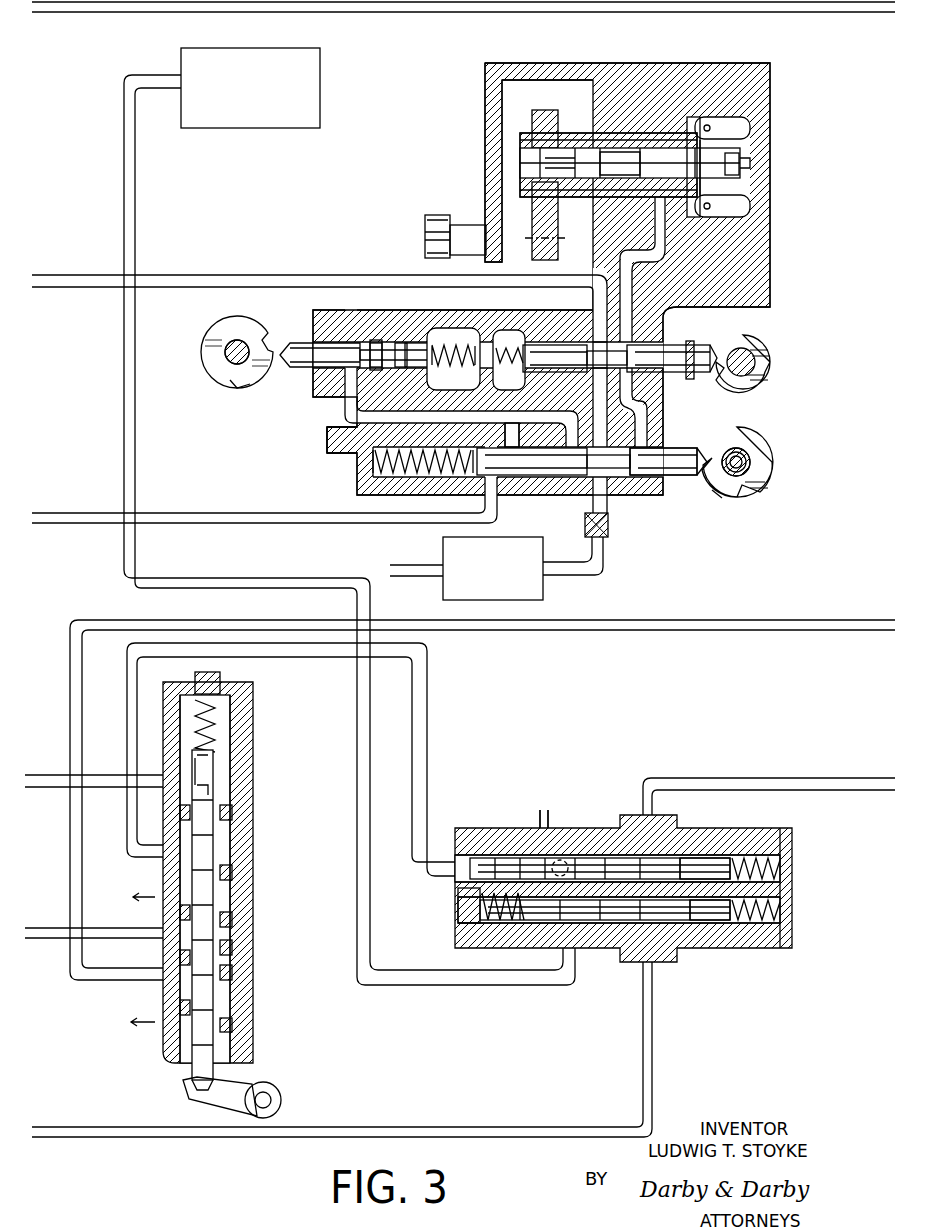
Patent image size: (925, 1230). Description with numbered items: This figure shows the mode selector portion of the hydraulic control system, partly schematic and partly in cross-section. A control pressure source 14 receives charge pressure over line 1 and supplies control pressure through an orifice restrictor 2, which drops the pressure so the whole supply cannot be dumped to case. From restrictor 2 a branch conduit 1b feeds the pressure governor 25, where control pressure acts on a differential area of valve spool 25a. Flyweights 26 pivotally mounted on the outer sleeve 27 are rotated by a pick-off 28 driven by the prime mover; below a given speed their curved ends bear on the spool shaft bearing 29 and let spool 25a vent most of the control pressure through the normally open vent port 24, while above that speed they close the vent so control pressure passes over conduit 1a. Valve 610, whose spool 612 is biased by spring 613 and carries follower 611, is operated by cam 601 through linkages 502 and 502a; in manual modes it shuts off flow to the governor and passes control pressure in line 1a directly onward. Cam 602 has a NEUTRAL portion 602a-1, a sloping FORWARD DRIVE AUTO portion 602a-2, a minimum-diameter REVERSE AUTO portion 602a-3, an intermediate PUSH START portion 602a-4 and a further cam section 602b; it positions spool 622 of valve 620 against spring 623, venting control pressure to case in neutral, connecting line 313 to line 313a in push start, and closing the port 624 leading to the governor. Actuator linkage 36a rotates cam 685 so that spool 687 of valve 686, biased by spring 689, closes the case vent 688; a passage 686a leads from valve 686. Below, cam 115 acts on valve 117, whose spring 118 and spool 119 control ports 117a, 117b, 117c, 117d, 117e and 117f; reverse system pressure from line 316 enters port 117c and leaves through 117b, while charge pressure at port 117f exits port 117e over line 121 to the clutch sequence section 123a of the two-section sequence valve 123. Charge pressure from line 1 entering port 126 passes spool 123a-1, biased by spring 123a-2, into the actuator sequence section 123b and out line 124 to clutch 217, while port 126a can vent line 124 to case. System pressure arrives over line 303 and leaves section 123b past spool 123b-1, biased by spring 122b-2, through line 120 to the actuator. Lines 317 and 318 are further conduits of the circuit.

The fluid line 318 is at (48, 8).
The clutch 217 is at (250, 88).
The line 124 is at (135, 195).
The conduit 1a is at (42, 282).
The branch conduit 1b is at (657, 232).
The line 1 is at (44, 760).
The vent port 24 is at (594, 130).
The pressure governor 25 is at (645, 64).
The valve spool 25a is at (642, 150).
The flyweights 26 is at (751, 128).
The outer sleeve 27 is at (692, 118).
The pick-off 28 is at (553, 250).
The spool shaft bearing 29 is at (720, 182).
The cam 685 is at (233, 328).
The actuator linkage 36a is at (228, 374).
The valve 686 is at (295, 385).
The passage 686a is at (344, 404).
The spool 687 is at (336, 343).
The vent port 688 is at (410, 307).
The spring 689 is at (463, 343).
The spring 613 is at (510, 344).
The spool 612 is at (562, 345).
The valve 610 is at (656, 339).
The follower 611 is at (690, 380).
The cam 601 is at (786, 364).
The linkage 502 is at (758, 345).
The linkage 502a is at (768, 373).
The cam 602 is at (747, 505).
The NEUTRAL cam portion 602a-1 is at (761, 436).
The FORWARD DRIVE AUTO cam portion 602a-2 is at (710, 436).
The REVERSE AUTO cam portion 602a-3 is at (724, 504).
The PUSH START cam portion 602a-4 is at (760, 488).
The cam section 602b is at (772, 475).
The spool 622 is at (655, 452).
The valve 620 is at (678, 477).
The spring 623 is at (389, 477).
The port 624 is at (546, 496).
The line 313a is at (340, 438).
The line 313 is at (38, 512).
The orifice restrictor 2 is at (612, 524).
The control pressure source 14 is at (443, 553).
The fluid line 317 is at (822, 618).
The line 121 is at (127, 725).
The spring 118 is at (217, 713).
The spool 119 is at (207, 780).
The valve 117 is at (144, 878).
The valve land 117a is at (238, 1023).
The output port 117b is at (234, 978).
The input port 117c is at (234, 932).
The port 117d is at (234, 890).
The output port 117e is at (234, 860).
The charge pressure input port 117f is at (234, 813).
The line 316 is at (134, 939).
The cam 115 is at (185, 1091).
The line 303 is at (54, 1128).
The line 120 is at (751, 778).
The sequence valve 123 is at (787, 827).
The clutch sequence valve section 123a is at (841, 881).
The actuator sequence section 123b is at (836, 920).
The spool 123a-1 is at (688, 860).
The spring 123a-2 is at (785, 858).
The spool 123b-1 is at (697, 912).
The spring 122b-2 is at (742, 924).
The charge pressure input port 126 is at (540, 826).
The port 126a is at (561, 858).